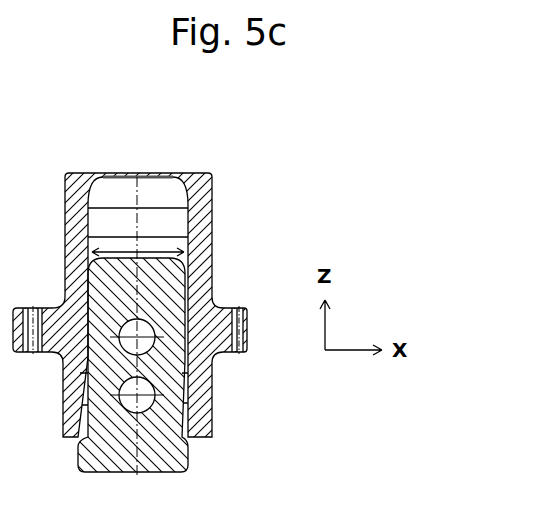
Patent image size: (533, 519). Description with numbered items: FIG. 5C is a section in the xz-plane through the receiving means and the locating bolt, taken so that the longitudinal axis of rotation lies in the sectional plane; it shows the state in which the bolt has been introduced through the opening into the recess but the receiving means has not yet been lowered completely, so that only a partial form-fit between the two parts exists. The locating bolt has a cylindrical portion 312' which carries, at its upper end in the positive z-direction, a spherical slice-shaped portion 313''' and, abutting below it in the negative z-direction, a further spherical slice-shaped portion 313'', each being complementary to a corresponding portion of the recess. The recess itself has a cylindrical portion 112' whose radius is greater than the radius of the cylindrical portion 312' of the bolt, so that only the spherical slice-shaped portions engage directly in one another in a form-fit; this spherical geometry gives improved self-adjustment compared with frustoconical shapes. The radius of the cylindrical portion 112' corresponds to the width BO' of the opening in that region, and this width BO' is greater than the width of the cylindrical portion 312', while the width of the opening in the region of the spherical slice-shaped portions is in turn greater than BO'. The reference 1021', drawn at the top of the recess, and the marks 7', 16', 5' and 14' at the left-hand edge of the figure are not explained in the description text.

The membrane / top plate 1021' is at (138, 147).
The width of the opening BO' is at (150, 295).
The spherical slice-shaped portion 313''' is at (193, 234).
The cylindrical portion 312' is at (180, 365).
The cylindrical portion 112' is at (150, 305).
The further spherical slice-shaped portion 313'' is at (175, 365).
The element 7' is at (6, 151).
The element 16' is at (12, 206).
The element 5' is at (12, 240).
The element 14' is at (15, 283).